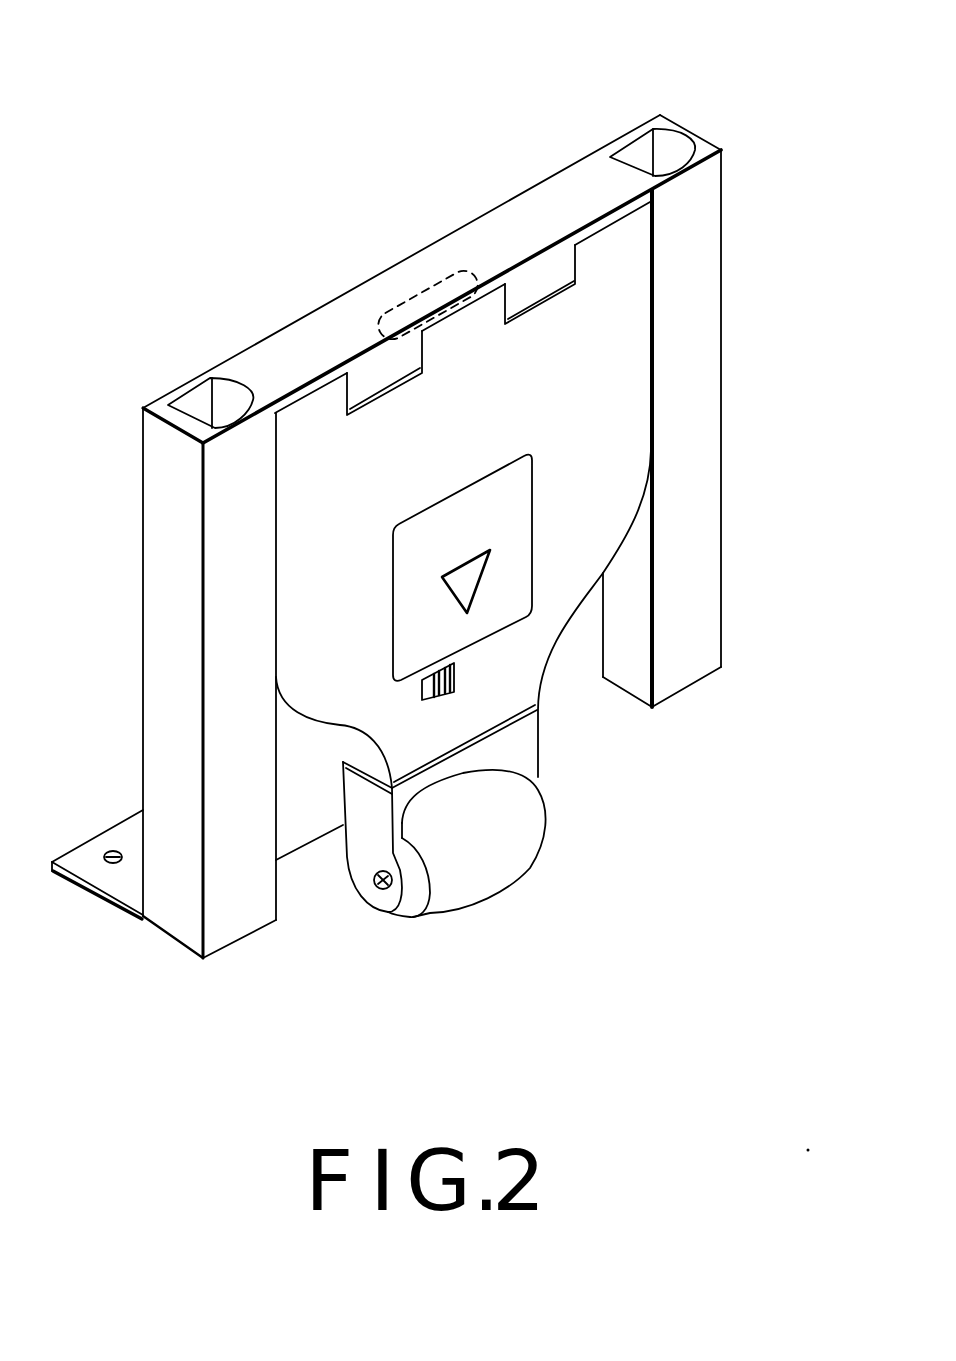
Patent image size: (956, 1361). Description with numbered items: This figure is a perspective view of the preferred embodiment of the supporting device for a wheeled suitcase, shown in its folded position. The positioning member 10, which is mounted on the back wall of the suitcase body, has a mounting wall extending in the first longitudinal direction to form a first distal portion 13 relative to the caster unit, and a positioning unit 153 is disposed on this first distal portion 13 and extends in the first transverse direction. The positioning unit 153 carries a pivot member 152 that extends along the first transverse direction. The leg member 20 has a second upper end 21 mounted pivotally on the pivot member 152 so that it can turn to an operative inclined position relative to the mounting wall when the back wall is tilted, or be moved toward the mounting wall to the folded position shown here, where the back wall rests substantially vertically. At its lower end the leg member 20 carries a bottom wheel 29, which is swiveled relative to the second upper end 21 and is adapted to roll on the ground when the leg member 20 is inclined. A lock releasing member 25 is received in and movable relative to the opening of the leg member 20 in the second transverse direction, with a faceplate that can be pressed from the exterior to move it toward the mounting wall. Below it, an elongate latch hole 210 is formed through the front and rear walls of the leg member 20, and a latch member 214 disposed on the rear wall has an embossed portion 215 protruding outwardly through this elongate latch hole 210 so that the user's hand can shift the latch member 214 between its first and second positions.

The positioning member 10 is at (726, 263).
The first distal portion 13 is at (242, 372).
The leg member 20 is at (488, 435).
The second upper end 21 is at (306, 413).
The lock releasing member 25 is at (512, 500).
The bottom wheel 29 is at (465, 883).
The pivot member 152 is at (400, 345).
The positioning unit 153 is at (372, 393).
The elongate latch hole 210 is at (430, 695).
The latch member 214 is at (432, 692).
The embossed portion 215 is at (455, 681).